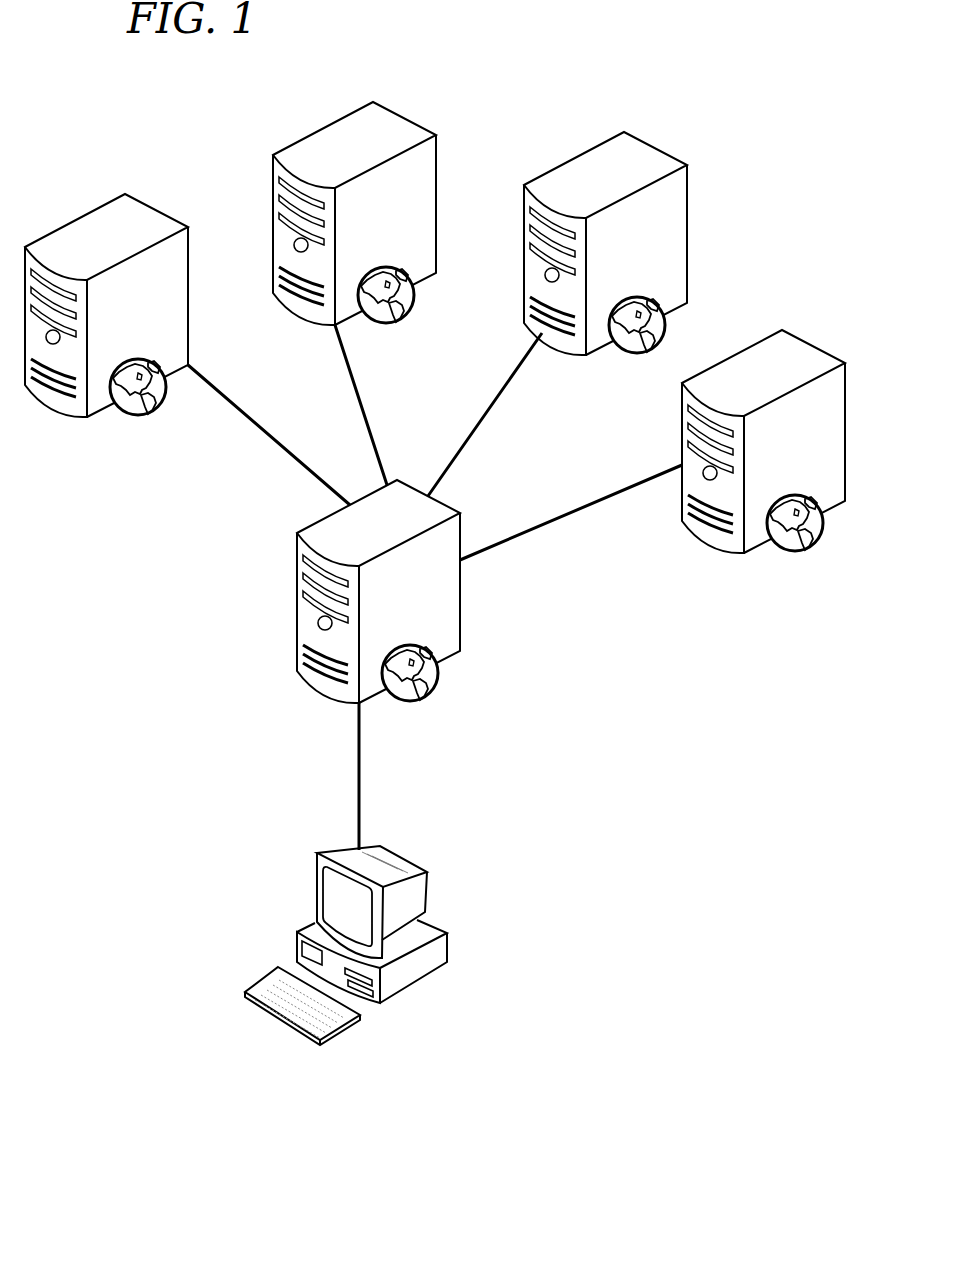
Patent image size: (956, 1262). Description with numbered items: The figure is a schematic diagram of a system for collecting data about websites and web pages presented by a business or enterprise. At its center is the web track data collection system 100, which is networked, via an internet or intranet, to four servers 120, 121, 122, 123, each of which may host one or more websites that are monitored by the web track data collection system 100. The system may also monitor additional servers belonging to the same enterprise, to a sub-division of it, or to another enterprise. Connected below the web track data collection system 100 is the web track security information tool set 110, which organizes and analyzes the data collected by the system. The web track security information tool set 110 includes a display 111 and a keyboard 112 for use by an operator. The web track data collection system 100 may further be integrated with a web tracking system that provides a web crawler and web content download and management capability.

The web track data collection system 100 is at (297, 599).
The web track security information tool set 110 is at (311, 971).
The display 111 is at (313, 877).
The keyboard 112 is at (293, 1022).
The server 120 is at (75, 218).
The server 121 is at (334, 128).
The server 122 is at (587, 150).
The server 123 is at (757, 344).